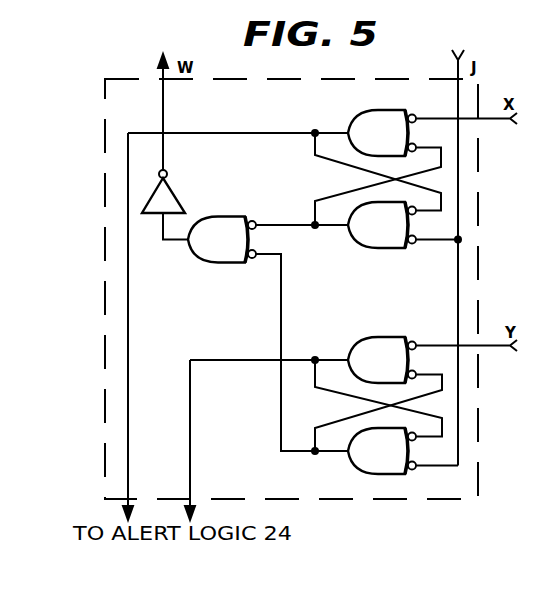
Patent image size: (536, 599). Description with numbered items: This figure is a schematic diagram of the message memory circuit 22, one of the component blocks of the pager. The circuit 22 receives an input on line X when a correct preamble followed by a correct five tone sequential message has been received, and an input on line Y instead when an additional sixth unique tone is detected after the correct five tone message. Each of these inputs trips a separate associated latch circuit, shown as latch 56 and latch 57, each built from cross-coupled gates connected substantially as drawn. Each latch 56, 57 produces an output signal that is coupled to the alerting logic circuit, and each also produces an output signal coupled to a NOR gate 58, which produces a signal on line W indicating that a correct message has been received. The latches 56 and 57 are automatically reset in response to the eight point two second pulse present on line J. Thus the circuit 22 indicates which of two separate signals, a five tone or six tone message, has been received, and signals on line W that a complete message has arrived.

The message memory circuit 22 is at (105, 220).
The latch circuit 56 is at (312, 174).
The latch circuit 57 is at (326, 334).
The NOR gate 58 is at (226, 254).